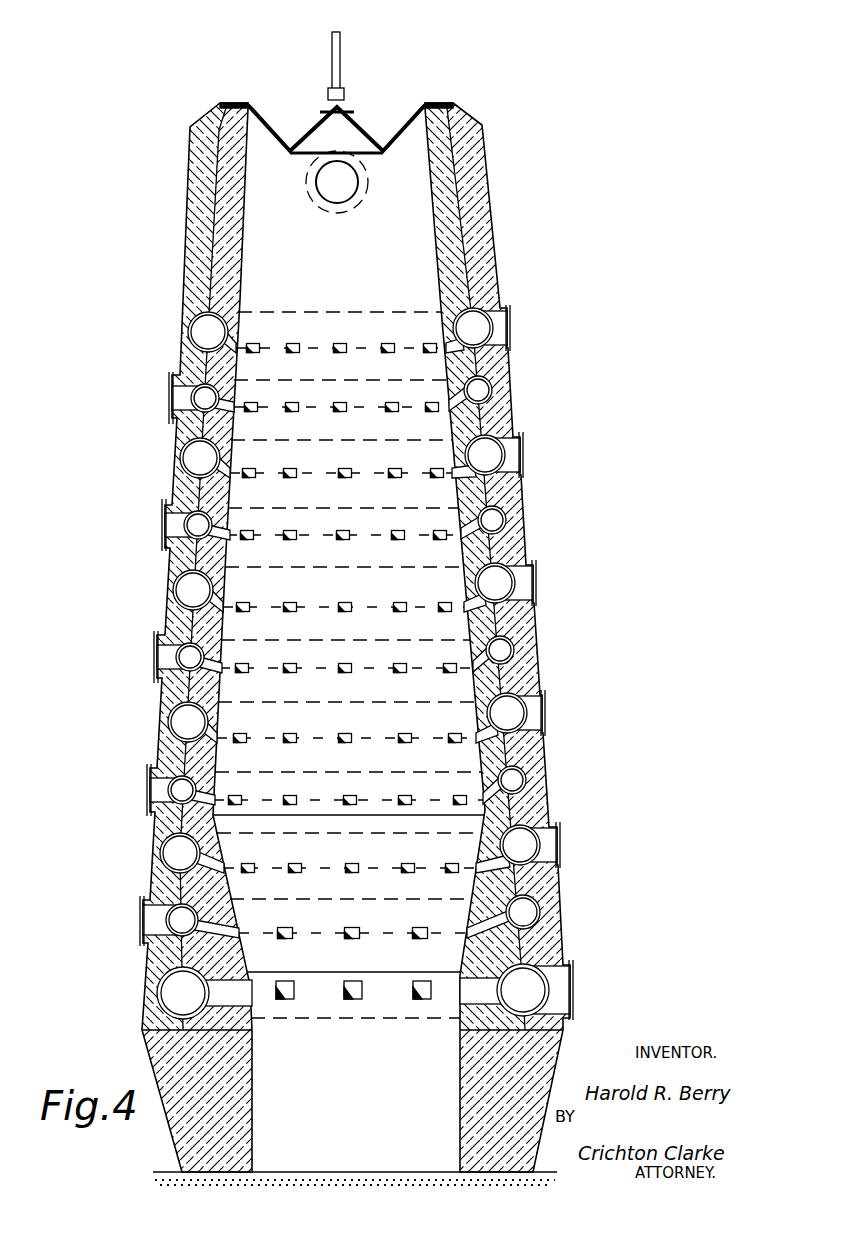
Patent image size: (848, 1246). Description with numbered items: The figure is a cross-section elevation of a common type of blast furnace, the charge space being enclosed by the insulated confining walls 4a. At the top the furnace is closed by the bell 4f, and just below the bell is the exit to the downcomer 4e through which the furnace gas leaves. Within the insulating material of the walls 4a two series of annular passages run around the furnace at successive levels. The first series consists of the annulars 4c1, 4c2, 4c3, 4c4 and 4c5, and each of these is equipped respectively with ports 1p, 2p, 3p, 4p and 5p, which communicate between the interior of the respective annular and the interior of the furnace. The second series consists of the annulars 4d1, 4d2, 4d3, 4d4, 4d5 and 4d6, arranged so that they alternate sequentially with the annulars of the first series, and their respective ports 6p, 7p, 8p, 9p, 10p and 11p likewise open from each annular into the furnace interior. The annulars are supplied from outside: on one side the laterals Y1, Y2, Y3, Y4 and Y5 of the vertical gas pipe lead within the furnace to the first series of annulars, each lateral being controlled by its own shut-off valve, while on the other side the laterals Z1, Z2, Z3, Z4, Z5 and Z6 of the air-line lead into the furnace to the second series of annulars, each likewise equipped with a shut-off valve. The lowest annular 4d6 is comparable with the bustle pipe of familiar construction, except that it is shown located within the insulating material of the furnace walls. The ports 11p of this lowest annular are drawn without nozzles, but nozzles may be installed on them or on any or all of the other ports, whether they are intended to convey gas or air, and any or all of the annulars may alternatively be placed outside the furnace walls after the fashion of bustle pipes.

The insulated confining walls 4a is at (200, 190).
The exit to downcomer 4e is at (352, 180).
The bell 4f is at (352, 125).
The annular passage 4c1 is at (200, 385).
The annular passage 4c2 is at (190, 518).
The annular passage 4c3 is at (187, 648).
The annular passage 4c4 is at (180, 783).
The annular passage 4c5 is at (178, 912).
The annular passage 4d1 is at (205, 330).
The annular passage 4d2 is at (200, 458).
The annular passage 4d3 is at (193, 590).
The annular passage 4d4 is at (188, 722).
The annular passage 4d5 is at (180, 853).
The annular passage 4d6 is at (180, 993).
The lateral Y1 is at (180, 398).
The lateral Y2 is at (175, 525).
The lateral Y3 is at (172, 660).
The lateral Y4 is at (165, 790).
The lateral Y5 is at (160, 918).
The lateral Z1 is at (497, 341).
The lateral Z2 is at (508, 465).
The lateral Z3 is at (518, 595).
The lateral Z4 is at (530, 725).
The lateral Z5 is at (545, 855).
The lateral Z6 is at (555, 985).
The ports 1p is at (236, 406).
The ports 2p is at (230, 534).
The ports 3p is at (223, 667).
The ports 4p is at (217, 799).
The ports 5p is at (240, 931).
The ports 6p is at (238, 346).
The ports 7p is at (232, 470).
The ports 8p is at (226, 606).
The ports 9p is at (220, 736).
The ports 10p is at (222, 866).
The ports 11p is at (255, 975).